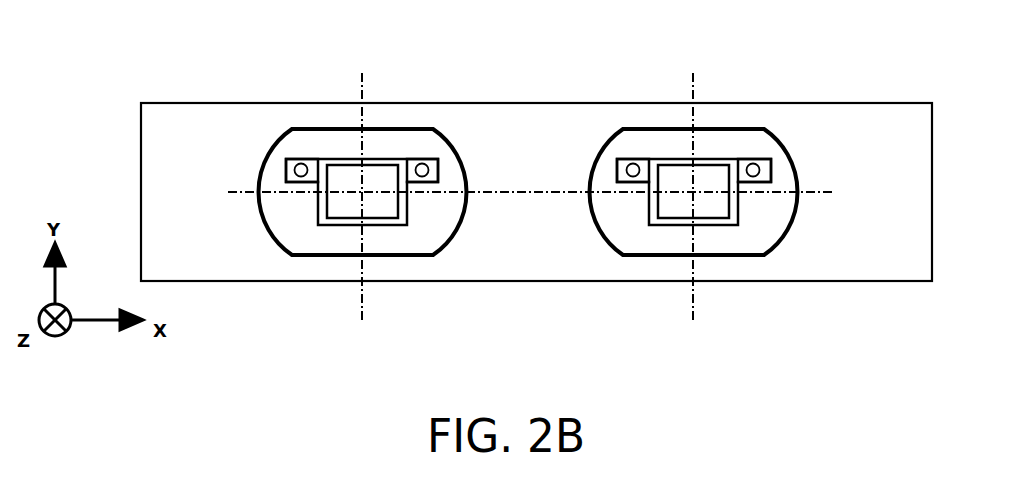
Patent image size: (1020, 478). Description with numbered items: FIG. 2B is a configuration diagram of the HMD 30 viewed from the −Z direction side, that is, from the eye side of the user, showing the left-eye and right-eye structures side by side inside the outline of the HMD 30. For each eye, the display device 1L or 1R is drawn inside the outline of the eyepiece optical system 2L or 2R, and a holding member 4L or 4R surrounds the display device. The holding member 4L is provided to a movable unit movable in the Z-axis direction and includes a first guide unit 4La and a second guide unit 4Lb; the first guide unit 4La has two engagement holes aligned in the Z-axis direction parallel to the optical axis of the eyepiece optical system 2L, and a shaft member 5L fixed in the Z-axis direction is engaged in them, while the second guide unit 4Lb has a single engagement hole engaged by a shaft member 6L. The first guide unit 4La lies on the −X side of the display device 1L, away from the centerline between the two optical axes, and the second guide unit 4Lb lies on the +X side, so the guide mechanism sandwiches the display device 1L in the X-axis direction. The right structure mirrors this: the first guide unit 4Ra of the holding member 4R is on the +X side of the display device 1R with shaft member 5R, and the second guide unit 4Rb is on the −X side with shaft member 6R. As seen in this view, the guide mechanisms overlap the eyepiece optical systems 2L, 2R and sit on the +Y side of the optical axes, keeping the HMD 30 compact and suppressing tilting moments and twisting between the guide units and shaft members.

The HMD 30 is at (148, 88).
The eyepiece optical system 2L is at (303, 256).
The eyepiece optical system 2R is at (727, 257).
The display device 1L is at (395, 165).
The display device 1R is at (715, 163).
The holding member 4L is at (403, 159).
The holding member 4R is at (747, 159).
The first guide unit 4La is at (297, 182).
The second guide unit 4Lb is at (432, 182).
The first guide unit 4Ra is at (757, 177).
The second guide unit 4Rb is at (627, 182).
The shaft member 5L is at (301, 163).
The shaft member 6L is at (422, 163).
The shaft member 5R is at (760, 163).
The shaft member 6R is at (633, 163).